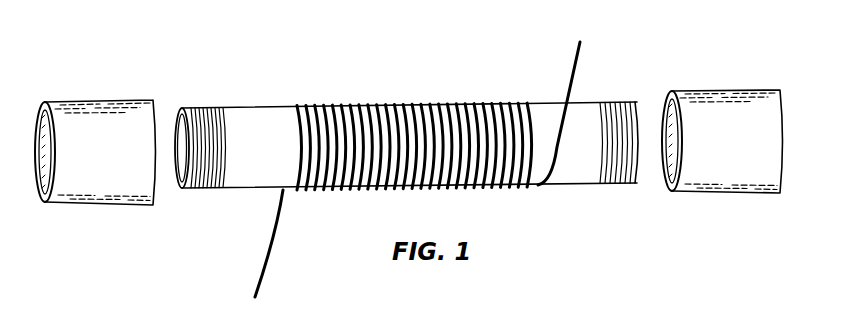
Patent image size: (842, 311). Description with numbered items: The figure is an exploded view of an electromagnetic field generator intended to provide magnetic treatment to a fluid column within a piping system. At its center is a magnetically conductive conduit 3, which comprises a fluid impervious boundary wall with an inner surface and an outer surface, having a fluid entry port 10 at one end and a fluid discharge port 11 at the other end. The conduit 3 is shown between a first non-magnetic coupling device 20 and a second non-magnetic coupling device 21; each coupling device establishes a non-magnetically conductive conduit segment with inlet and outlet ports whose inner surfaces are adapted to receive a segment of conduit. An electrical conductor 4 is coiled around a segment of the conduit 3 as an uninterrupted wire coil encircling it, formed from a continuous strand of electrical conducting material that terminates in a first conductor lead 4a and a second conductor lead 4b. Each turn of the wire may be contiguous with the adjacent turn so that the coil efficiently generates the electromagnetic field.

The magnetically conductive conduit 3 is at (271, 158).
The electrical conductor 4 is at (430, 105).
The first conductor lead 4a is at (262, 280).
The second conductor lead 4b is at (570, 63).
The fluid entry port 10 is at (178, 132).
The fluid discharge port 11 is at (638, 128).
The first non-magnetic coupling device 20 is at (119, 157).
The second non-magnetic coupling device 21 is at (747, 149).